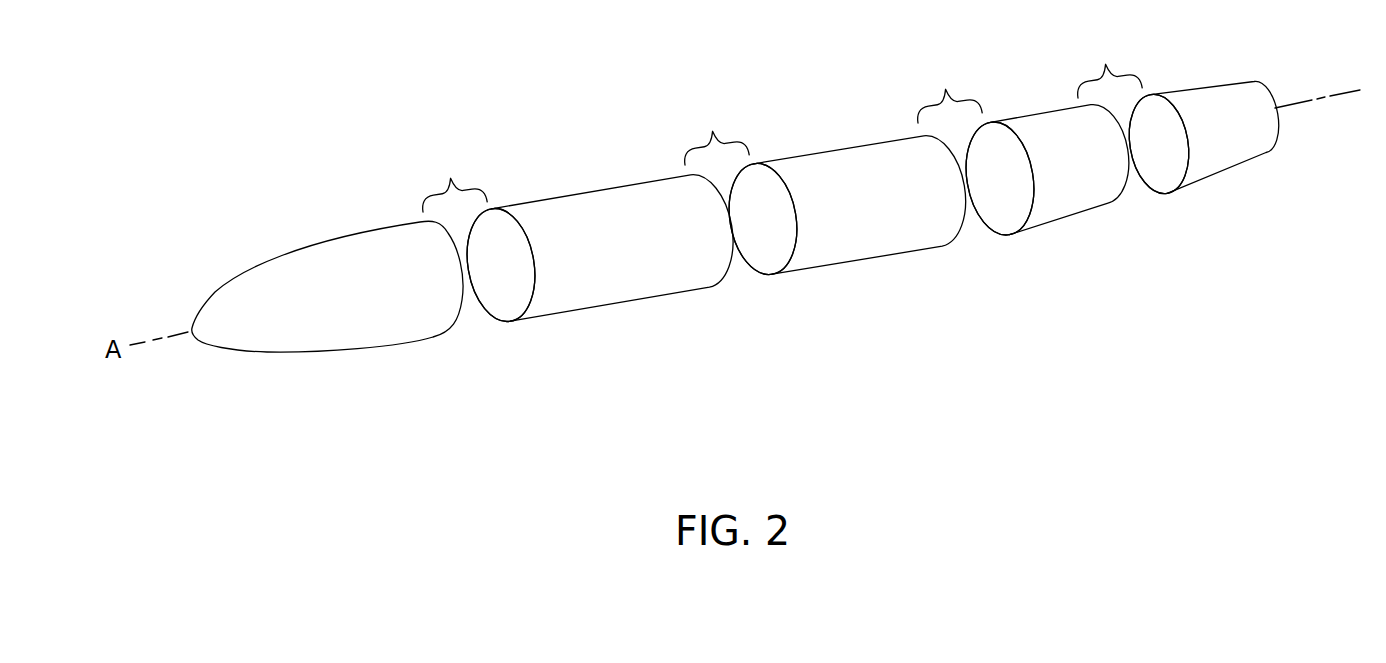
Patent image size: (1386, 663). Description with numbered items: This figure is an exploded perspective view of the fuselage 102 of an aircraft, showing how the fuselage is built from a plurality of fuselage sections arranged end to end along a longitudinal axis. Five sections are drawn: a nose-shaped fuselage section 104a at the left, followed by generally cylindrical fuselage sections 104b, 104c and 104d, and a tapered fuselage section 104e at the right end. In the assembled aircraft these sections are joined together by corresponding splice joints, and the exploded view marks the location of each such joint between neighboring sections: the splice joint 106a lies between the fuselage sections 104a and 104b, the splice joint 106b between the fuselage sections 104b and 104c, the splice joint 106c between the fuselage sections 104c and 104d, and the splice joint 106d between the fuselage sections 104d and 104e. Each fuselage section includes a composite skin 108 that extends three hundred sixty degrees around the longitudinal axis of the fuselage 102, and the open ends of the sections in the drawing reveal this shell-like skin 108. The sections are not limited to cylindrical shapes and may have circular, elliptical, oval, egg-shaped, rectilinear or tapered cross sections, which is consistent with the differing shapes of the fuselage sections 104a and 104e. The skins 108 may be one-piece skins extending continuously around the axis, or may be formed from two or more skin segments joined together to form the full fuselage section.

The fuselage 102 is at (335, 128).
The fuselage section 104a is at (350, 352).
The fuselage section 104b is at (577, 313).
The fuselage section 104c is at (872, 260).
The fuselage section 104d is at (1072, 218).
The fuselage section 104e is at (1227, 172).
The splice joint 106a is at (452, 178).
The splice joint 106b is at (714, 131).
The splice joint 106c is at (947, 90).
The splice joint 106d is at (1107, 65).
The composite skin 108 is at (505, 310).